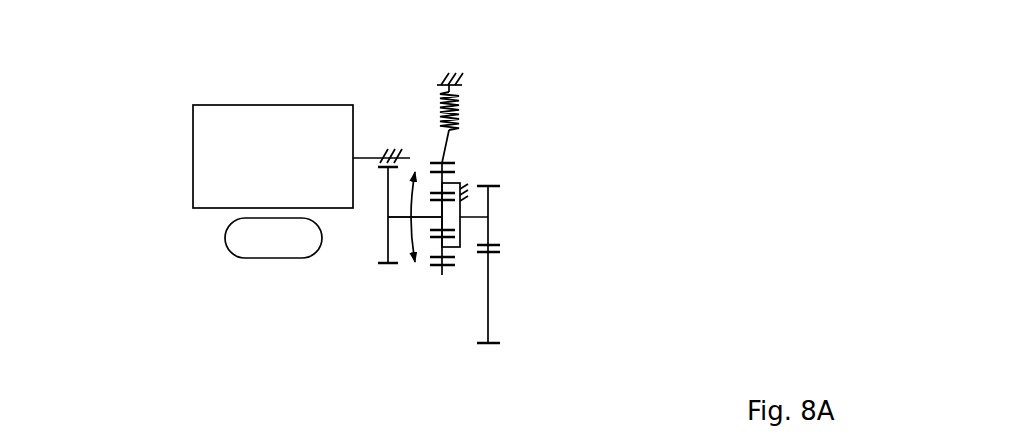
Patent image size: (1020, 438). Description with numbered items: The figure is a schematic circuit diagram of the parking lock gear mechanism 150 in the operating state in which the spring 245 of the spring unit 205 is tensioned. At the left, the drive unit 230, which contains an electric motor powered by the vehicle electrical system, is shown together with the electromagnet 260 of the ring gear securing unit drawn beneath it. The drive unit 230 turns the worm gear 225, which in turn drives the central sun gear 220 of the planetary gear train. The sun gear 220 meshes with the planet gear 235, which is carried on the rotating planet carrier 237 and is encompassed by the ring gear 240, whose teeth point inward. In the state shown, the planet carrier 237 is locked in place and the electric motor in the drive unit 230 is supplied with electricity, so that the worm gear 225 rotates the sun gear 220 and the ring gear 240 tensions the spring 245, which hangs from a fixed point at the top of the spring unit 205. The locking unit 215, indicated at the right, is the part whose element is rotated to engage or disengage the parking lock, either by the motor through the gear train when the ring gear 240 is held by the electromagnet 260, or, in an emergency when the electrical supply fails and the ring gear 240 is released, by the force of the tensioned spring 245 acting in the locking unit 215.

The parking lock gear mechanism 150 is at (200, 139).
The drive unit 230 is at (193, 158).
The electromagnet 260 is at (224, 243).
The worm gear 225 is at (389, 140).
The spring unit 205 is at (477, 83).
The spring 245 is at (461, 111).
The ring gear 240 is at (455, 162).
The planet gear 235 is at (446, 183).
The locking unit 215 is at (519, 213).
The sun gear 220 is at (440, 222).
The planet carrier 237 is at (461, 229).